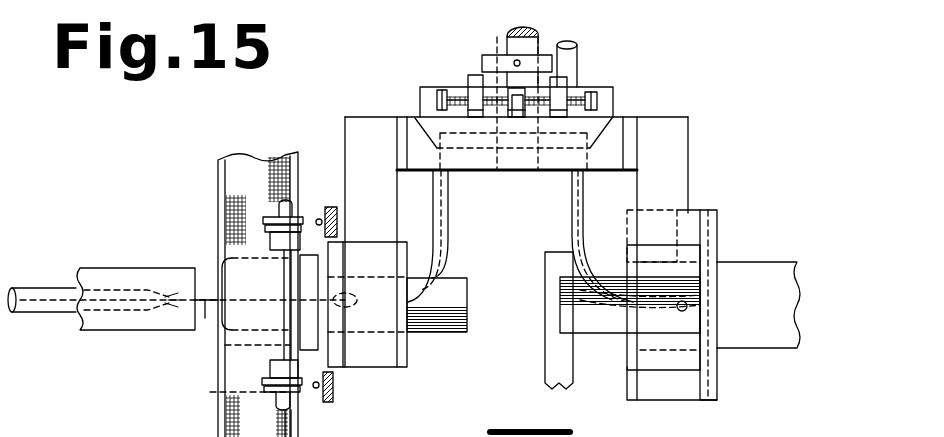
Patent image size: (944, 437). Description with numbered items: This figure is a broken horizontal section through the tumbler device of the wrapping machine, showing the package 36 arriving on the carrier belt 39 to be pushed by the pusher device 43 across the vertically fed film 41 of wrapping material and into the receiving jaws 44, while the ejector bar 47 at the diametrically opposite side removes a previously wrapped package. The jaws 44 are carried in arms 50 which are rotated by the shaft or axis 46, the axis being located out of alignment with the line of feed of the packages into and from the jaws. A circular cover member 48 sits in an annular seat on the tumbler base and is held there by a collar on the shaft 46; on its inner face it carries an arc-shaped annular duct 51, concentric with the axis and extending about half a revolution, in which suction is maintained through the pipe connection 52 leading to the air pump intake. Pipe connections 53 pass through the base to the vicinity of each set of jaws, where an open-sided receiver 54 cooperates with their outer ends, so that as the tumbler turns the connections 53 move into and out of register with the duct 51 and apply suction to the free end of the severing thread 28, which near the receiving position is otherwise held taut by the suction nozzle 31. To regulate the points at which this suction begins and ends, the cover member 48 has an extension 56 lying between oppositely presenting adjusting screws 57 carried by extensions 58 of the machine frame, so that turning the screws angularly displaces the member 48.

The severing thread 28 is at (220, 303).
The suction nozzle 31 is at (50, 288).
The package 36 is at (222, 330).
The carrier belt 39 is at (222, 430).
The film of wrapping material 41 is at (328, 356).
The pusher device 43 is at (116, 270).
The receiving jaws 44 is at (403, 347).
The axis 46 is at (518, 35).
The ejector bar 47 is at (548, 260).
The circular cover member 48 is at (612, 90).
The arms 50 is at (357, 122).
The annular duct 51 is at (507, 145).
The pipe connection 52 is at (567, 44).
The pipe connections 53 is at (452, 202).
The open-sided receiver 54 is at (560, 320).
The extension 56 is at (517, 93).
The adjusting screws 57 is at (445, 95).
The extensions of the frame work 58 is at (474, 80).